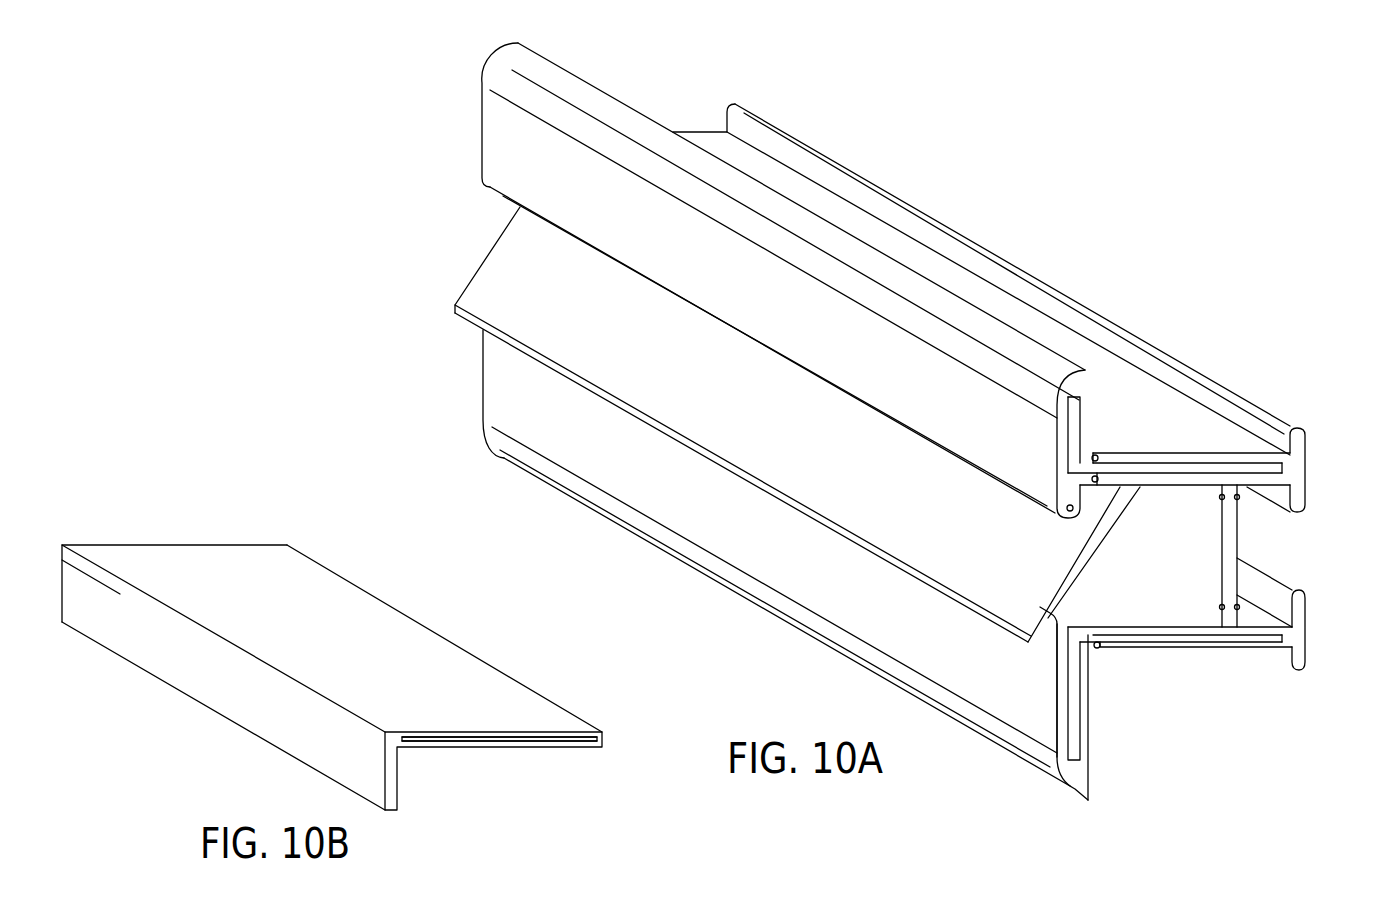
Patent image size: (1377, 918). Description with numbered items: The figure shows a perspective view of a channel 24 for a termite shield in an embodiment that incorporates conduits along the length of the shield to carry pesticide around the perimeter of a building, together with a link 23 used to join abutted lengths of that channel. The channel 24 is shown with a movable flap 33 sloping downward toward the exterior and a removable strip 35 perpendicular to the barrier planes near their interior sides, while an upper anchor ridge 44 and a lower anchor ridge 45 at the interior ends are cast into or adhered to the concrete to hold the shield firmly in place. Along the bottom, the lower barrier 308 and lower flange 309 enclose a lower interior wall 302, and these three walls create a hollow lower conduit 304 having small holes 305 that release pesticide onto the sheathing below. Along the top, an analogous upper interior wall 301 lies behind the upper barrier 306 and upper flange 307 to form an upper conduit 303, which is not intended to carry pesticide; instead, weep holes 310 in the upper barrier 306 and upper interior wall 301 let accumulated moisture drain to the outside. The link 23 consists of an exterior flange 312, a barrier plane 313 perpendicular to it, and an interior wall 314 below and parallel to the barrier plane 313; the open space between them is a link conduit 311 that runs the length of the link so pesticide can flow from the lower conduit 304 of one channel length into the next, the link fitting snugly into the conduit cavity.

In FIG. 10B, the link 23 is at (192, 717).
In FIG. 10A, the channel 24 is at (662, 578).
In FIG. 10A, the movable flap 33 is at (494, 254).
In FIG. 10A, the removable strip 35 is at (1238, 540).
In FIG. 10A, the upper anchor ridge 44 is at (1307, 488).
In FIG. 10A, the lower anchor ridge 45 is at (1307, 658).
In FIG. 10A, the upper interior wall 301 is at (1192, 457).
In FIG. 10A, the lower interior wall 302 is at (1158, 645).
In FIG. 10A, the upper conduit 303 is at (1240, 470).
In FIG. 10A, the lower conduit 304 is at (1213, 634).
In FIG. 10A, the small holes 305 is at (1100, 650).
In FIG. 10A, the upper barrier 306 is at (1175, 483).
In FIG. 10A, the upper flange 307 is at (1054, 448).
In FIG. 10A, the lower barrier 308 is at (1165, 622).
In FIG. 10A, the lower flange 309 is at (1062, 717).
In FIG. 10A, the weep holes 310 is at (1099, 455).
In FIG. 10B, the link conduit 311 is at (502, 740).
In FIG. 10B, the exterior flange 312 is at (127, 643).
In FIG. 10B, the barrier plane 313 is at (452, 732).
In FIG. 10B, the interior wall 314 is at (453, 748).